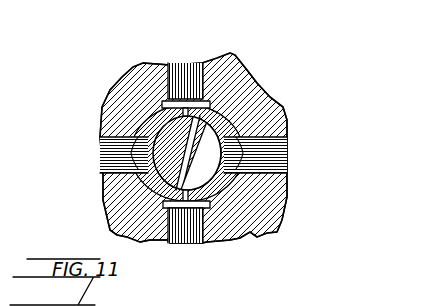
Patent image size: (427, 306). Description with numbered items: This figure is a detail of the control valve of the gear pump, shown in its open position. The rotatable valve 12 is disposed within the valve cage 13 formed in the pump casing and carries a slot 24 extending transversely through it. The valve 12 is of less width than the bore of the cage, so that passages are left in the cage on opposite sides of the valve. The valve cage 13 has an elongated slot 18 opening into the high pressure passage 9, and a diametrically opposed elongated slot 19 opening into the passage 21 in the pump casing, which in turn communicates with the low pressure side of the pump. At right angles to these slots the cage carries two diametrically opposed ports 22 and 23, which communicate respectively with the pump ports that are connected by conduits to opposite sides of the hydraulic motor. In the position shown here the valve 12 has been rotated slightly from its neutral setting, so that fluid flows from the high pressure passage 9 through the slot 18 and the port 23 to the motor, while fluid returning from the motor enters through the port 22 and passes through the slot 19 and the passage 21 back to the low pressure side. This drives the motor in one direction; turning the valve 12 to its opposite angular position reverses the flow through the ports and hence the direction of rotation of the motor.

The high pressure passage 9 is at (184, 226).
The valve 12 is at (172, 150).
The valve cage 13 is at (155, 112).
The elongated slot 18 is at (190, 193).
The elongated slot 19 is at (197, 106).
The passage 21 is at (182, 72).
The port 22 is at (146, 163).
The port 23 is at (236, 151).
The slot 24 is at (198, 131).